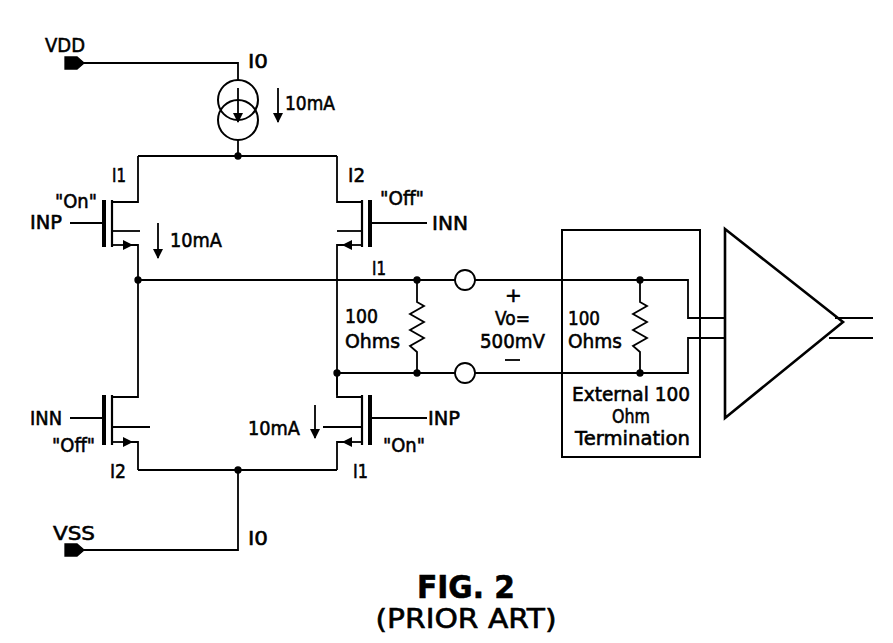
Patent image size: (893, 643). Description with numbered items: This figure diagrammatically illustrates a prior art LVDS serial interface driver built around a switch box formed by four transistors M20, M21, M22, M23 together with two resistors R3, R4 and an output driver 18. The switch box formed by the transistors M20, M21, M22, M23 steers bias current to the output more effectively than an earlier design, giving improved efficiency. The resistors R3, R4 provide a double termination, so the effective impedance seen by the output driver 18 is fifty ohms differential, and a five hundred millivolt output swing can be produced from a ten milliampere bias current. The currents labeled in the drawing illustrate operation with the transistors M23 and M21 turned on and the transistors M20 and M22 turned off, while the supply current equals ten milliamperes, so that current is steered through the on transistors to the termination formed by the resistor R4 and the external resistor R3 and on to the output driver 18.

The output driver 18 is at (782, 274).
The transistor M20 is at (130, 375).
The transistor M21 is at (355, 421).
The transistor M22 is at (355, 275).
The transistor M23 is at (130, 218).
The resistor R3 is at (656, 326).
The resistor R4 is at (432, 326).